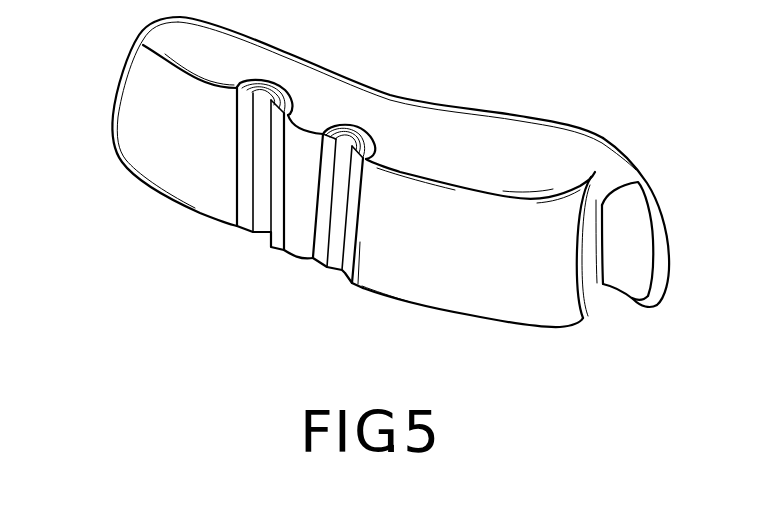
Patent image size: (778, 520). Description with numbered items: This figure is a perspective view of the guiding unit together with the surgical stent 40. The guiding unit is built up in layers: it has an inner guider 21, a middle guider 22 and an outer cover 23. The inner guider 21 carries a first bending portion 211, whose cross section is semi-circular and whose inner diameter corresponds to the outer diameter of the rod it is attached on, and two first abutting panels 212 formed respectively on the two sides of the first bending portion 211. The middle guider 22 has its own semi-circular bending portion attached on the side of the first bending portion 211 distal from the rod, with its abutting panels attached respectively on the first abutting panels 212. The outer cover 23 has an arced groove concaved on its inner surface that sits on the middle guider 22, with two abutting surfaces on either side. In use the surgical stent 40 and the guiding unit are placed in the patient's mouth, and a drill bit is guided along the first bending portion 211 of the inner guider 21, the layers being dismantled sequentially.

The inner guider 21 is at (213, 154).
The first bending portion 211 is at (260, 128).
The first abutting panels 212 is at (283, 198).
The middle guider 22 is at (274, 88).
The outer cover 23 is at (285, 96).
The surgical stent 40 is at (514, 129).